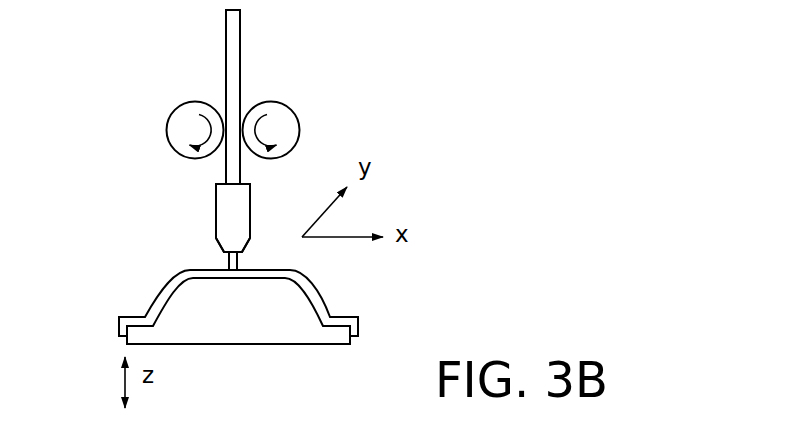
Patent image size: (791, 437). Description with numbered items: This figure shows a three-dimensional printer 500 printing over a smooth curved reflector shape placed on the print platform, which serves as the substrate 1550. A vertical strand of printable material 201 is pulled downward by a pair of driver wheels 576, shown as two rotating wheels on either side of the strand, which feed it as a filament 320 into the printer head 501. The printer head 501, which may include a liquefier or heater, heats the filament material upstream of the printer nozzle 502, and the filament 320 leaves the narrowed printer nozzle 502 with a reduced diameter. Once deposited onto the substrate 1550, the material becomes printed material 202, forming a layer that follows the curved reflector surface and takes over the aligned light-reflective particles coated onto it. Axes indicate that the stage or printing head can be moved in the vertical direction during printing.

The printable material 201 is at (233, 31).
The filament 320 is at (262, 76).
The driver wheels 576 is at (162, 110).
The 3D printer 500 is at (438, 117).
The printer head 501 is at (260, 193).
The printer nozzle 502 is at (217, 248).
The printed material 202 is at (310, 287).
The substrate 1550 is at (358, 298).